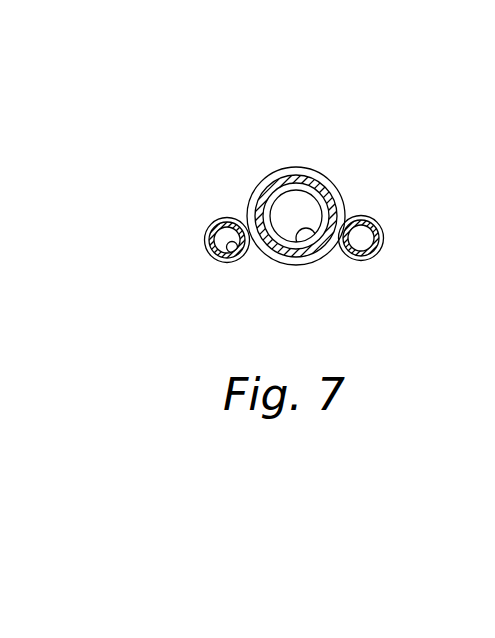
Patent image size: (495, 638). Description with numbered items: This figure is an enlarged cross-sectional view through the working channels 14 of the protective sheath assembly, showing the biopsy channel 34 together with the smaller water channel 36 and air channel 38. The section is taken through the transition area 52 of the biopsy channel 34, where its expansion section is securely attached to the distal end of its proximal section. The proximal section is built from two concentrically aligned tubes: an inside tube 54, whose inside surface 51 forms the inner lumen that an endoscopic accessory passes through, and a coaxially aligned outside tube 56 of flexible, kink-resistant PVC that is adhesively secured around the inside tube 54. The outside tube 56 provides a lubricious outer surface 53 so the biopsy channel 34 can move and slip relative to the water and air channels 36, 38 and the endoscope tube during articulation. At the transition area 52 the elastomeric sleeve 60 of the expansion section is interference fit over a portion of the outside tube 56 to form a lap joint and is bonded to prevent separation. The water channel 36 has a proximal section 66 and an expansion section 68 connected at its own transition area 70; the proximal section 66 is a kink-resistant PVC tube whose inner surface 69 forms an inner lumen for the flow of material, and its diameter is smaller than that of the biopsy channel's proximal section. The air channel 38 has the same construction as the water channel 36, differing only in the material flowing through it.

The working channels 14 is at (213, 188).
The transition area 52 is at (278, 121).
The outer surface 53 is at (253, 192).
The elastomeric sleeve 60 is at (256, 196).
The outside tube 56 is at (297, 184).
The inside tube 54 is at (318, 201).
The biopsy channel 34 is at (346, 205).
The inside surface 51 is at (314, 244).
The water channel 36 is at (212, 222).
The expansion section 68 is at (208, 254).
The proximal section 66 is at (218, 256).
The inner surface 69 is at (238, 258).
The transition area 70 is at (181, 243).
The air channel 38 is at (383, 235).